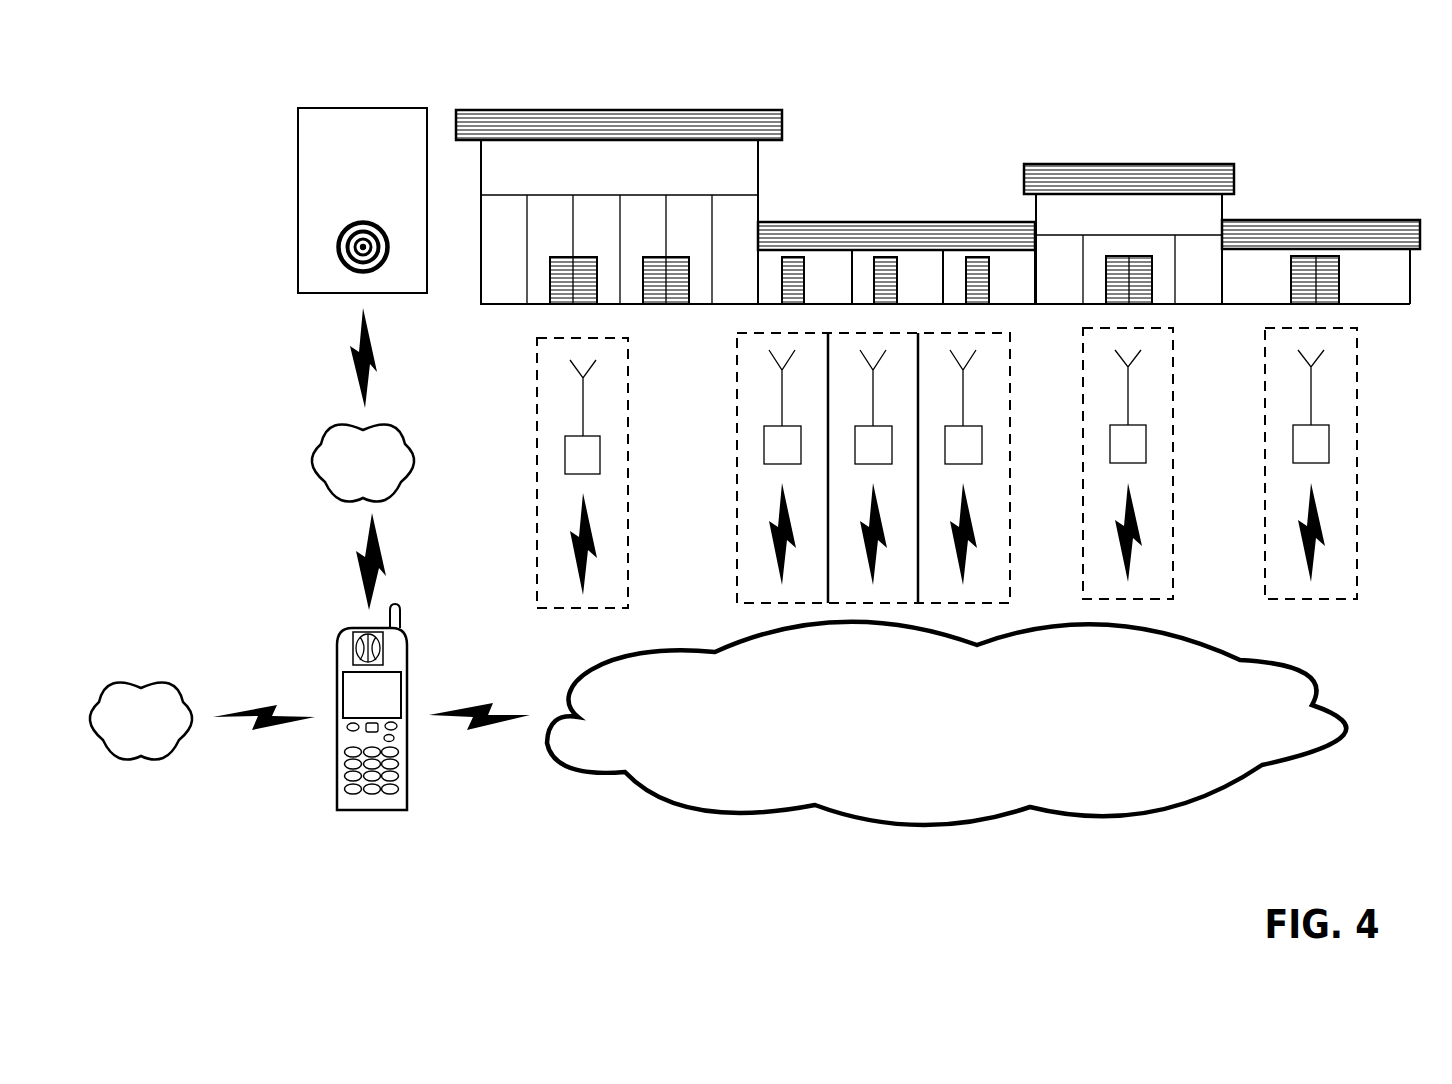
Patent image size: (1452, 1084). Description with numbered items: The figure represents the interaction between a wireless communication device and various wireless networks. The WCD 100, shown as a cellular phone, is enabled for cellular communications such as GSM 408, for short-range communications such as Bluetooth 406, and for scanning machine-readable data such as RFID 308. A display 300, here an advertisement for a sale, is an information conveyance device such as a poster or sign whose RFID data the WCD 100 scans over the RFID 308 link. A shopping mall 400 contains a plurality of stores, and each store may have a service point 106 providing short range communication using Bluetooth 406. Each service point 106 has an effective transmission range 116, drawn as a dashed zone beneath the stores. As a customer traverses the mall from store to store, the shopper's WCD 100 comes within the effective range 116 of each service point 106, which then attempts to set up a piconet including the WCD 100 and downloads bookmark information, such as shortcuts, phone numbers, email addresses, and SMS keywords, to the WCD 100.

The display 300 is at (298, 108).
The RFID 308 is at (363, 462).
The shopping mall 400 is at (1024, 170).
The service point 106 is at (1329, 463).
The effective transmission range 116 is at (1333, 598).
The Bluetooth 406 is at (946, 723).
The GSM 408 is at (141, 720).
The WCD 100 is at (338, 782).